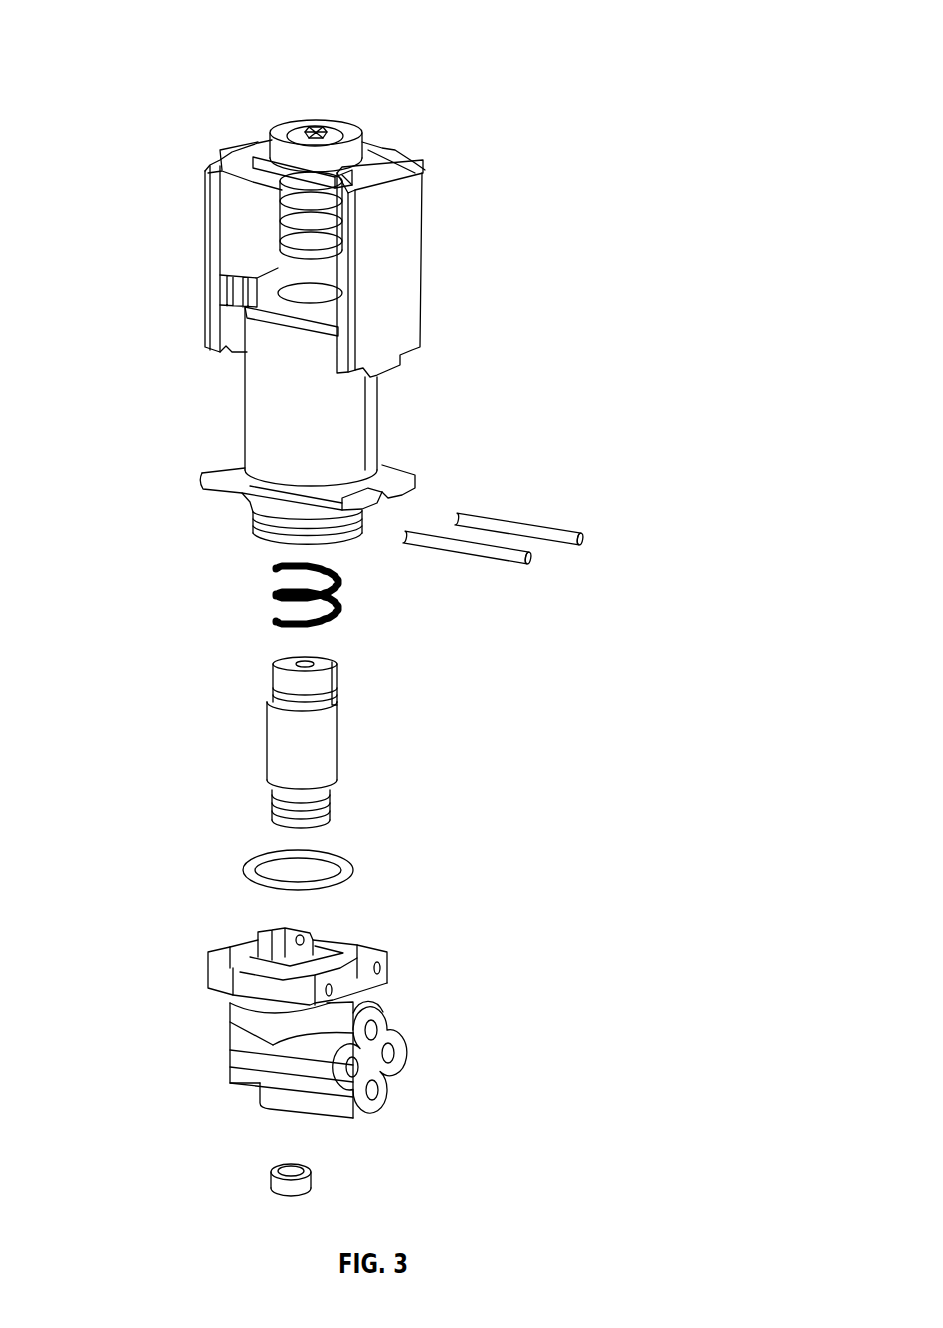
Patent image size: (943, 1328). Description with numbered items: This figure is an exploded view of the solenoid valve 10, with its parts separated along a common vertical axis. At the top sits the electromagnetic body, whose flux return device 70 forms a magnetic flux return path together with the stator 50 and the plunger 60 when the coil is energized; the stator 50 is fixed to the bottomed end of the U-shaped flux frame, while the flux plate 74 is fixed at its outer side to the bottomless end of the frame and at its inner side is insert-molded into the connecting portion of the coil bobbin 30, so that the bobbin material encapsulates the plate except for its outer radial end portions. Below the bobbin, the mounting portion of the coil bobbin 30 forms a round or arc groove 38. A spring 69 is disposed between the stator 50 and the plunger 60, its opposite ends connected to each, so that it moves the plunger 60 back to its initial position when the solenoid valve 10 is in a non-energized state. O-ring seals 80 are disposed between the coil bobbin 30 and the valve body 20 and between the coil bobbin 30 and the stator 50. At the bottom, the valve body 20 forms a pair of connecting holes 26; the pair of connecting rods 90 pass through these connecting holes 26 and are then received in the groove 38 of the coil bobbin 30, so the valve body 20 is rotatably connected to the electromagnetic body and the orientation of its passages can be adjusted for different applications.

The solenoid valve 10 is at (478, 122).
The valve body 20 is at (383, 1063).
The connecting holes 26 is at (383, 967).
The coil bobbin 30 is at (243, 472).
The groove 38 is at (253, 522).
The stator 50 is at (207, 180).
The plunger 60 is at (307, 743).
The spring 69 is at (277, 597).
The flux return device 70 is at (395, 295).
The flux plate 74 is at (400, 468).
The O-ring seals 80 is at (280, 262).
The connecting rods 90 is at (533, 557).